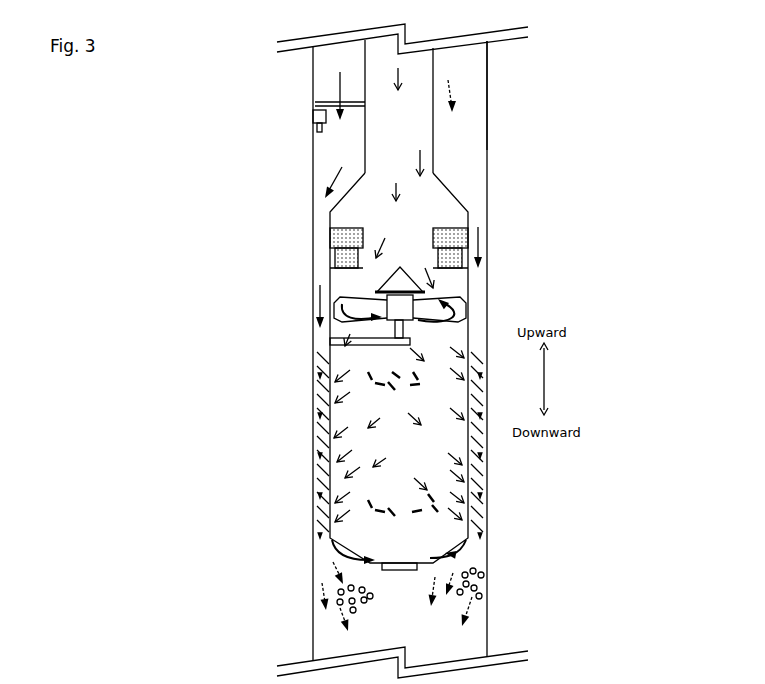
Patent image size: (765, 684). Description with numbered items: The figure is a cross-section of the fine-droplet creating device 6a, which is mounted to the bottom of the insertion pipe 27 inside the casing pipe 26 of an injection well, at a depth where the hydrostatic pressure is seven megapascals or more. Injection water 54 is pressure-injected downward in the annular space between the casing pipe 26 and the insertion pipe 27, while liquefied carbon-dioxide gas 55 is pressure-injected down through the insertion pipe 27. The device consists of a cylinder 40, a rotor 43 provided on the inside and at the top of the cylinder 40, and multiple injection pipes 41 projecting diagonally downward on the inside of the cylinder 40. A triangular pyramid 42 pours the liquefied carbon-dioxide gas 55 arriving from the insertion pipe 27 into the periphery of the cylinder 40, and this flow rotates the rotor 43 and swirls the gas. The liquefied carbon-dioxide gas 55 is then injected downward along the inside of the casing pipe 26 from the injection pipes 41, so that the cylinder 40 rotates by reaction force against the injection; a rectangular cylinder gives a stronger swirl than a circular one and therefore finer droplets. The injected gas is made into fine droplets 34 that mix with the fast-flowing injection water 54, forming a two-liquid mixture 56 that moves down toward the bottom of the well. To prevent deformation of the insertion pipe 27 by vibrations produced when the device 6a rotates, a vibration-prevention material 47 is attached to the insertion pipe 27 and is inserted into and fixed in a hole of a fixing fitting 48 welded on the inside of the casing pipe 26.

The fine-droplet creating device 6a is at (590, 186).
The casing pipe 26 is at (488, 88).
The insertion pipe 27 is at (433, 143).
The fine droplets 34 is at (489, 582).
The cylinder 40 is at (330, 256).
The injection pipes 41 is at (318, 432).
The triangular pyramid 42 is at (380, 292).
The rotor 43 is at (445, 298).
The vibration-prevention material 47 is at (331, 102).
The fixing fitting 48 is at (312, 114).
The injection water 54 is at (468, 245).
The liquefied carbon-dioxide gas 55 is at (420, 152).
The two-liquid mixture 56 is at (316, 586).